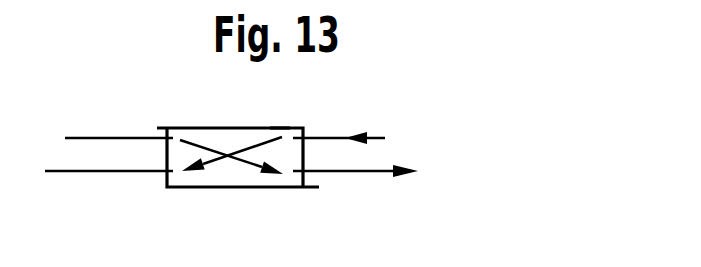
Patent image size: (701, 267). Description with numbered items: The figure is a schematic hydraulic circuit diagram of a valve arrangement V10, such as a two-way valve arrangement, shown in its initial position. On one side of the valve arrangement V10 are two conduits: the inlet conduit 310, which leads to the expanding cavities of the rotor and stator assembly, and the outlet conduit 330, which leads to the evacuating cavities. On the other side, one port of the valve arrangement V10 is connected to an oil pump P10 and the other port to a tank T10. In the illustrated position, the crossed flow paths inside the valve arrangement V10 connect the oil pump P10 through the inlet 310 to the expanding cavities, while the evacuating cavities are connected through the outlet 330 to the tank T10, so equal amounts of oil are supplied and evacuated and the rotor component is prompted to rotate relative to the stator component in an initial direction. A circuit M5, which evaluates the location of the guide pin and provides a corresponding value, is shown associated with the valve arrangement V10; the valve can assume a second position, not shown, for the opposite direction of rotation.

The valve arrangement V10 is at (238, 183).
The circuit M5 is at (280, 128).
The conduit 330 is at (119, 122).
The conduit 310 is at (109, 189).
The oil pump P10 is at (450, 131).
The tank T10 is at (439, 174).